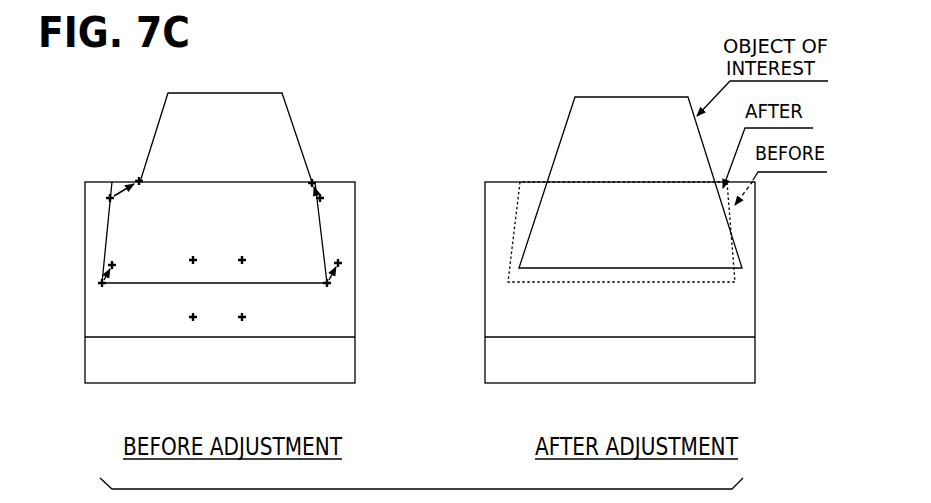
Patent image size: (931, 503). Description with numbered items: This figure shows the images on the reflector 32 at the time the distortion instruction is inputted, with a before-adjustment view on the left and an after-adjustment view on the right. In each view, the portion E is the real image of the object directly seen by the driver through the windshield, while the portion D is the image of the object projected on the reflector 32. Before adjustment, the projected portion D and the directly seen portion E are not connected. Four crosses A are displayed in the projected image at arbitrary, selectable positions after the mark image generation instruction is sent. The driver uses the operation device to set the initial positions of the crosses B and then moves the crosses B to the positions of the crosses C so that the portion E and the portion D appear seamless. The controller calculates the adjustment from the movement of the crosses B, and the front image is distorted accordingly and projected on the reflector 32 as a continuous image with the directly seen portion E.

The reflector 32 is at (105, 384).
The crosses A is at (219, 295).
The crosses B is at (216, 253).
The crosses C is at (228, 218).
The portion D is at (372, 232).
The portion E is at (441, 180).